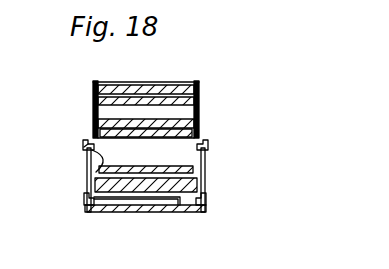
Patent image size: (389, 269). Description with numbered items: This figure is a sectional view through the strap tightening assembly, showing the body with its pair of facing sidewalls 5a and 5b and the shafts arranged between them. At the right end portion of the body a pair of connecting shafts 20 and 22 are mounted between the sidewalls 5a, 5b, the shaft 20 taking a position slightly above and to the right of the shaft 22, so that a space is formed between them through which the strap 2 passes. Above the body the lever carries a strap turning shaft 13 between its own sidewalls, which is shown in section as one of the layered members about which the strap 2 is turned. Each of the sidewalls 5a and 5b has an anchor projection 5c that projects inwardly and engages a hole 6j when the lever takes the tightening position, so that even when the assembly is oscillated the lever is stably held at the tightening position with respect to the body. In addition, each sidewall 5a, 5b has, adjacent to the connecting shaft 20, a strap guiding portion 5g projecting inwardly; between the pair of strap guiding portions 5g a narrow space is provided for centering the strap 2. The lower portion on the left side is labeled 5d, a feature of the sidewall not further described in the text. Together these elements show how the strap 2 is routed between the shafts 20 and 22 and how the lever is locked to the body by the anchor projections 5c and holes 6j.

The strap 2 is at (186, 84).
The strap turning shaft 13 is at (199, 102).
The hole 6j is at (172, 132).
The anchor projection 5c is at (85, 148).
The sidewall 5a is at (87, 172).
The sidewall 5b is at (205, 168).
The connecting shaft 20 is at (205, 184).
The lower left clip 5d is at (88, 203).
The strap guiding portion 5g is at (206, 198).
The connecting shaft 22 is at (142, 213).